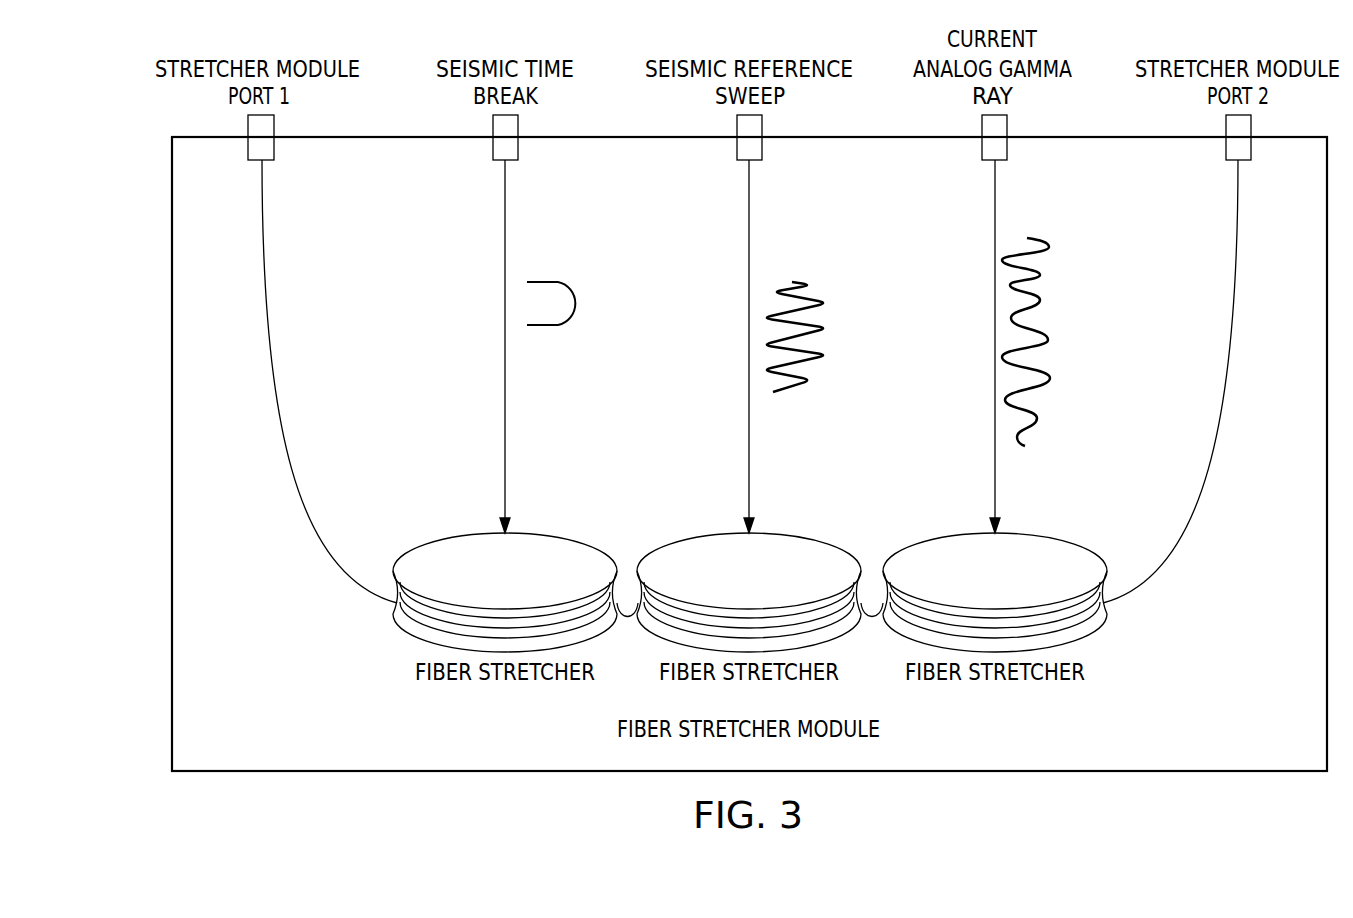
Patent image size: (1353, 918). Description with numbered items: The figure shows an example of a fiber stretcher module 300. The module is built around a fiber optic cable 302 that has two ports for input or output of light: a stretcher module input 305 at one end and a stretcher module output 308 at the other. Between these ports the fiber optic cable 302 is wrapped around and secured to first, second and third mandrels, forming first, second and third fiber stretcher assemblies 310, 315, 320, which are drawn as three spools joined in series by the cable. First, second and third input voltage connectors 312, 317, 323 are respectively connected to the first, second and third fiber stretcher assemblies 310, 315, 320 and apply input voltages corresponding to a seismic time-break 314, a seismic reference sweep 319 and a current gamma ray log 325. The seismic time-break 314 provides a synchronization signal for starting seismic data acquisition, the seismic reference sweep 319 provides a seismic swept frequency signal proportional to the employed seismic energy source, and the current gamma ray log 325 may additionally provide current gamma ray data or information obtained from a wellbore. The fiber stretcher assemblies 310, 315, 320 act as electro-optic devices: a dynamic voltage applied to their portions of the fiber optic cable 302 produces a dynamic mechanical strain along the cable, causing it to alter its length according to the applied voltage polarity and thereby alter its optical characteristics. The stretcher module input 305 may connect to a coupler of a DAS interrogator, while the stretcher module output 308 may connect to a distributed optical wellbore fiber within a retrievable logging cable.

The fiber stretcher module 300 is at (112, 66).
The fiber optic cable 302 is at (331, 557).
The stretcher module input 305 is at (248, 128).
The stretcher module output 308 is at (1251, 128).
The first fiber stretcher assembly 310 is at (443, 542).
The first input voltage connector 312 is at (493, 128).
The seismic time-break 314 is at (573, 256).
The second fiber stretcher assembly 315 is at (688, 542).
The second input voltage connector 317 is at (738, 128).
The seismic reference sweep 319 is at (830, 266).
The third fiber stretcher assembly 320 is at (1048, 542).
The third input voltage connector 323 is at (1007, 128).
The current gamma ray log 325 is at (1063, 230).